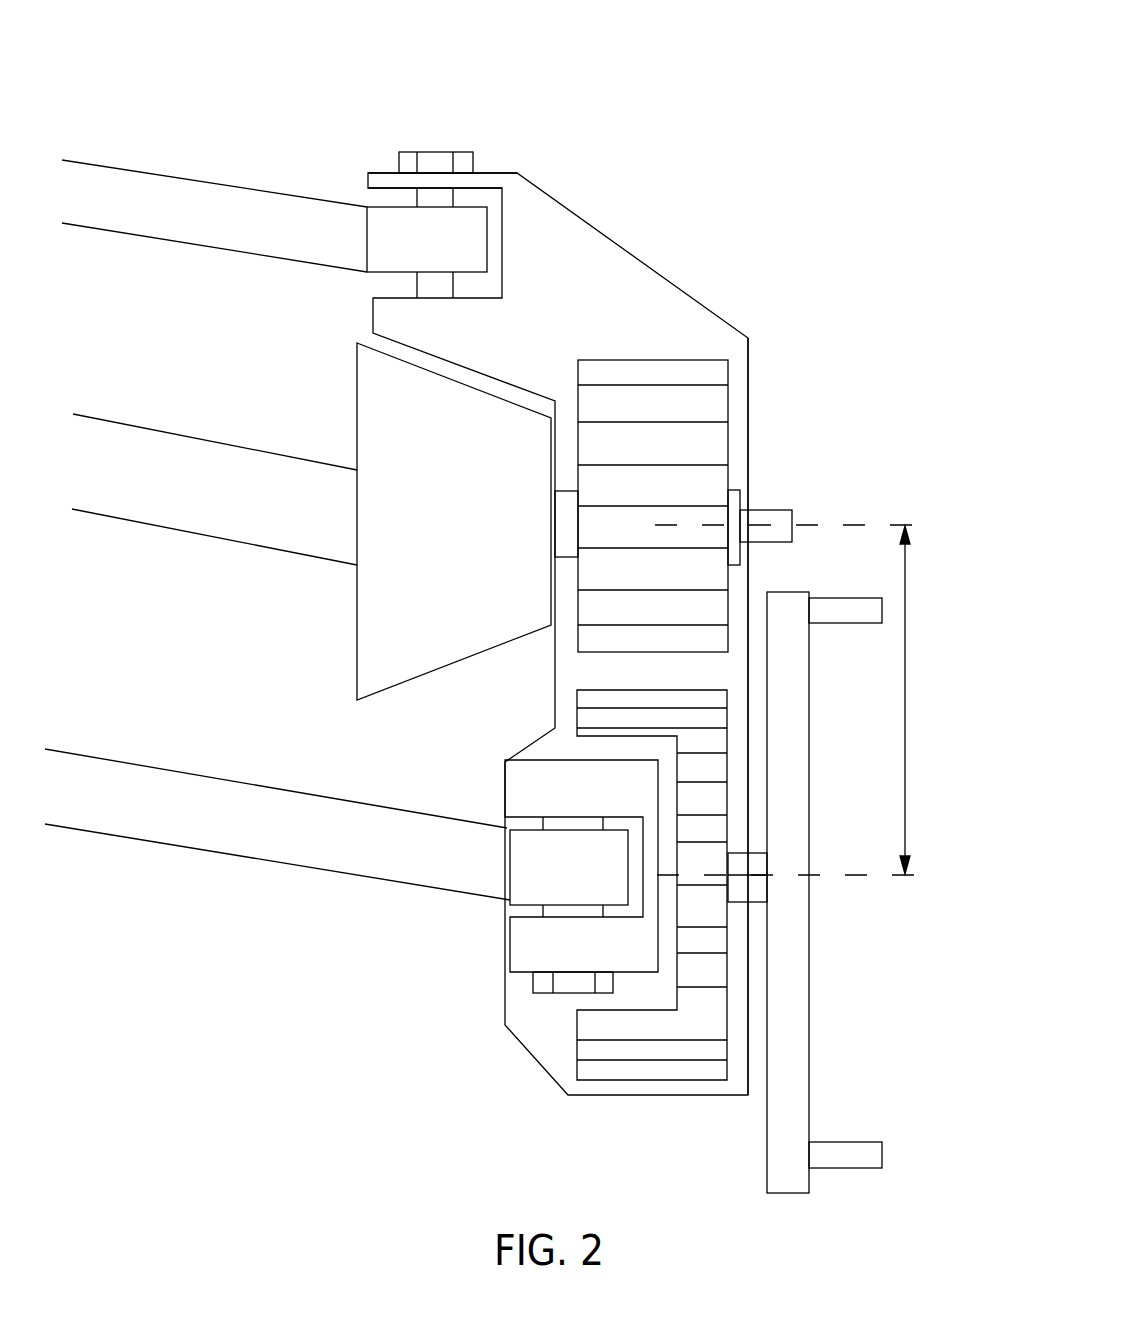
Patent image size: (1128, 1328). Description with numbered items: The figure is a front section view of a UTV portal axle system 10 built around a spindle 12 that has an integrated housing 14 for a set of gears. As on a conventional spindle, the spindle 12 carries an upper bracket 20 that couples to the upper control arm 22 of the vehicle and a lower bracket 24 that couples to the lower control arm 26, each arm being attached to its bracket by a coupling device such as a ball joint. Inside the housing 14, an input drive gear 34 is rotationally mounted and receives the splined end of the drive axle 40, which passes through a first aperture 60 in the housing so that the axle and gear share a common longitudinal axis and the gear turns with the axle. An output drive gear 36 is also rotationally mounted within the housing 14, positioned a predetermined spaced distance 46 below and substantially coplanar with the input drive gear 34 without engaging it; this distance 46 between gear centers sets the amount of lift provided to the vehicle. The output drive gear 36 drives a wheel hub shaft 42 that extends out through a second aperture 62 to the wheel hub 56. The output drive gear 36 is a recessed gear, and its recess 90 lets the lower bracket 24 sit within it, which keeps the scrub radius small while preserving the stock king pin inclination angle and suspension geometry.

The UTV portal axle system 10 is at (707, 82).
The spindle 12 is at (593, 265).
The housing 14 is at (718, 312).
The upper bracket 20 is at (378, 180).
The upper control arm 22 is at (230, 202).
The lower bracket 24 is at (538, 953).
The lower control arm 26 is at (282, 843).
The input drive gear 34 is at (708, 404).
The output drive gear 36 is at (713, 972).
The drive axle 40 is at (227, 510).
The wheel hub shaft 42 is at (740, 885).
The spaced distance 46 is at (905, 680).
The wheel hub 56 is at (797, 1078).
The first aperture 60 is at (551, 560).
The second aperture 62 is at (750, 857).
The recess 90 is at (655, 993).